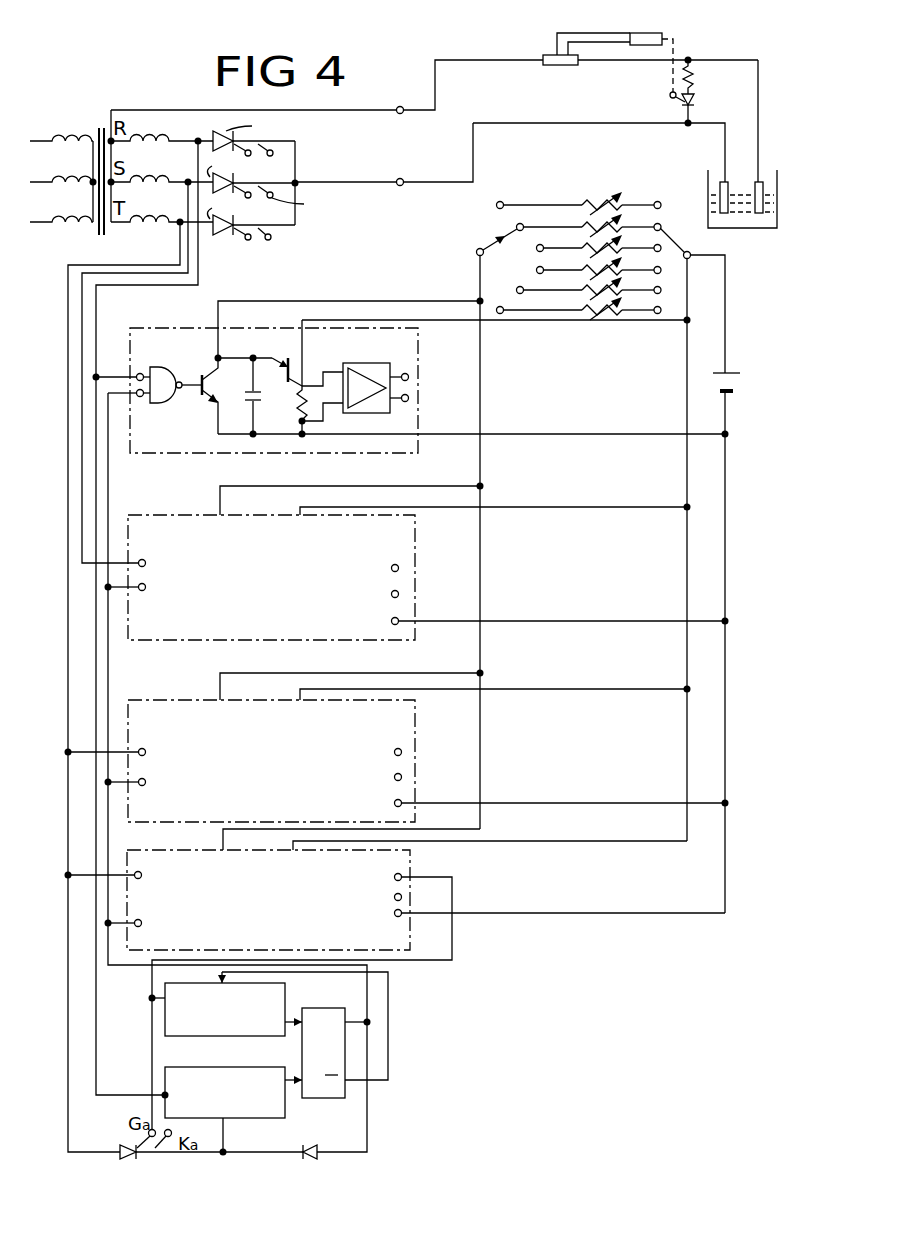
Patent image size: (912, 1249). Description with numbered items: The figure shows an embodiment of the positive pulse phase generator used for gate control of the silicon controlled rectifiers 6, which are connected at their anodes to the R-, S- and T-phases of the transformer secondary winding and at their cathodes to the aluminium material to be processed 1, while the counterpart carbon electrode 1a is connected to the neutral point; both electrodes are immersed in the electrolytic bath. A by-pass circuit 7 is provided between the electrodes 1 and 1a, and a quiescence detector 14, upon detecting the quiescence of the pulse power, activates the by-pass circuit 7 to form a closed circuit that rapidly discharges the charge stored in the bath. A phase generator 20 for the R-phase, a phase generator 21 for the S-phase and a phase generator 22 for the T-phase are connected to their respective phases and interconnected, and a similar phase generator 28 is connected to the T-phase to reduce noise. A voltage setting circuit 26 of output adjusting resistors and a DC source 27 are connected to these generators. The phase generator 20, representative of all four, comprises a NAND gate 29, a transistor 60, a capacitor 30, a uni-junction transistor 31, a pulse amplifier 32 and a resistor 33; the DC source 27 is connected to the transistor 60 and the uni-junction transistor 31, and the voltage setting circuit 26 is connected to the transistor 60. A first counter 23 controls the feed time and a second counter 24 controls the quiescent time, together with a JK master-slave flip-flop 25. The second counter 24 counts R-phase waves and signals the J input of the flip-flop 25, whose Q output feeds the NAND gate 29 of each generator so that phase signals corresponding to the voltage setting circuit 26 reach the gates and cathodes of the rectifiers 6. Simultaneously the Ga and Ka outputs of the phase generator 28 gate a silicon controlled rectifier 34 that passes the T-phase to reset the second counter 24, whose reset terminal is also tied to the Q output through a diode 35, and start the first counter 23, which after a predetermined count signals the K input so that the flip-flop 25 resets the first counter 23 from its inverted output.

The material to be processed 1 is at (720, 184).
The counterpart carbon electrode 1a is at (756, 184).
The quiescence detector 14 is at (645, 33).
The by-pass circuit 7 is at (702, 99).
The silicon controlled rectifiers 6 is at (313, 160).
The voltage setting circuit 26 is at (549, 196).
The DC source 27 is at (740, 383).
The phase generator for the R-phase 20 is at (199, 329).
The NAND gate 29 is at (165, 369).
The transistor 60 is at (214, 405).
The capacitor 30 is at (260, 387).
The uni-junction transistor 31 is at (304, 370).
The resistor 33 is at (297, 411).
The pulse amplifier 32 is at (366, 364).
The phase generator for the S-phase 21 is at (206, 515).
The phase generator for the T-phase 22 is at (206, 700).
The phase generator 28 is at (202, 850).
The first counter 23 is at (216, 1037).
The second counter 24 is at (232, 1120).
The flip-flop 25 is at (305, 1008).
The silicon controlled rectifier 34 is at (122, 1150).
The diode 35 is at (316, 1147).